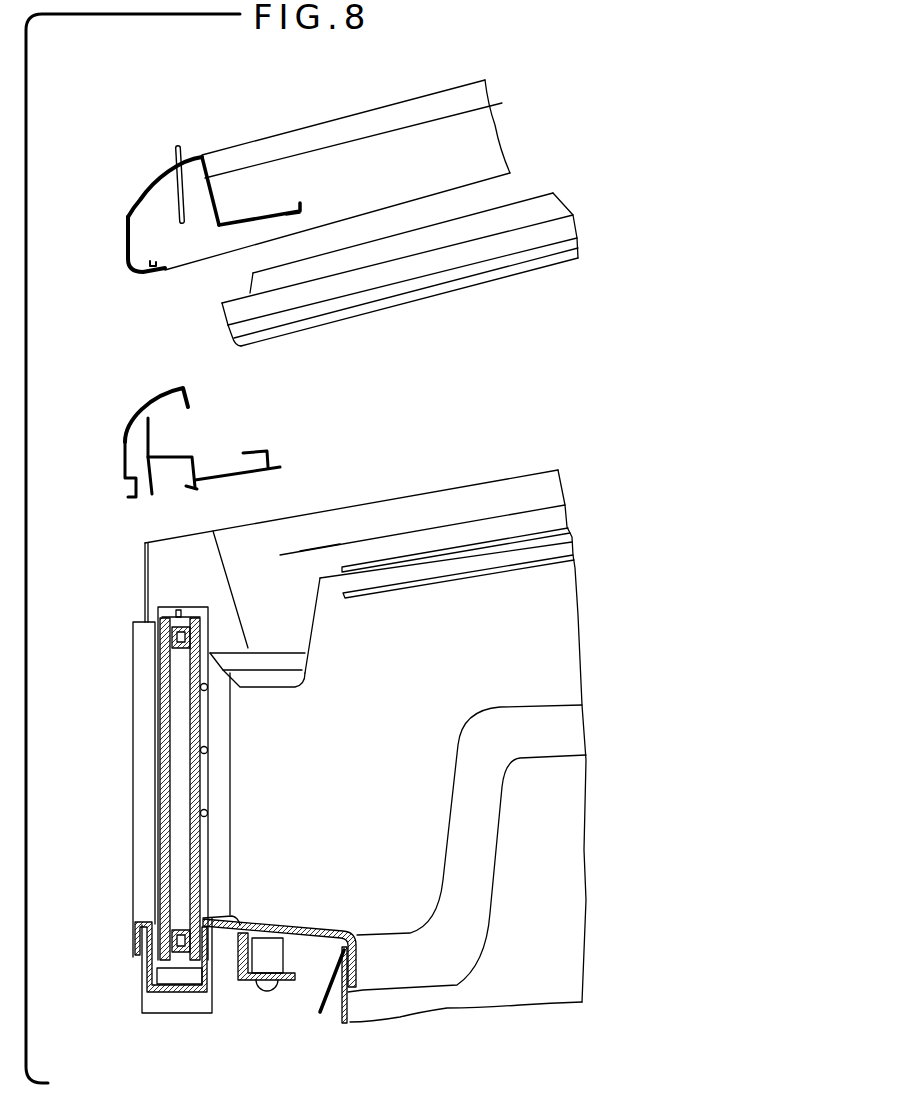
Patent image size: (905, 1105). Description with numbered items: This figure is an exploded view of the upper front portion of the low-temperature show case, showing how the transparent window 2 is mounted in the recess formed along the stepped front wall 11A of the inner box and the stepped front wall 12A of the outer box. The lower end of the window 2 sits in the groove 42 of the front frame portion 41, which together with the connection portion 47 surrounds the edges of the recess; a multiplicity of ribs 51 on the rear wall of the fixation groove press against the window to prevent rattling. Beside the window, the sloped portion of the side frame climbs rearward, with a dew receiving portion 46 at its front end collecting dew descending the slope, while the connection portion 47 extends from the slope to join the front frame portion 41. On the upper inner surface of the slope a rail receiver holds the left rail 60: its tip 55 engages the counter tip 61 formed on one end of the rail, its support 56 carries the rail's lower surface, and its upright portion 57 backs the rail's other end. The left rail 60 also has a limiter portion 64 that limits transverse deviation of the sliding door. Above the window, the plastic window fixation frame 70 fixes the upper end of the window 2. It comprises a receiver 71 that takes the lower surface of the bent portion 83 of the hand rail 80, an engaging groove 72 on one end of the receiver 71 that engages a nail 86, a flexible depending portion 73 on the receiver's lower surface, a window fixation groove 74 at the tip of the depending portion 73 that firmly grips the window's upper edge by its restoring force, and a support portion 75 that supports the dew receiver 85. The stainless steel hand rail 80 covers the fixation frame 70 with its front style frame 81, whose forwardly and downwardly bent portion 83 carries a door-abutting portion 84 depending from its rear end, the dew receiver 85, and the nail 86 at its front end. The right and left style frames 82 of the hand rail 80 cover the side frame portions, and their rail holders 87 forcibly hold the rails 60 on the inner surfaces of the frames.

The window 2 is at (158, 765).
The front wall of the inner box 11A is at (353, 1008).
The front wall of the outer box 12A is at (140, 987).
The front frame portion 41 is at (294, 927).
The groove 42 is at (190, 978).
The dew receiving portion 46 is at (290, 680).
The connection portion 47 is at (318, 932).
The ribs 51 is at (207, 688).
The tip 55 is at (407, 571).
The support 56 is at (445, 548).
The upright portion 57 is at (478, 525).
The left rail 60 is at (418, 285).
The counter tip 61 is at (232, 339).
The limiter portion 64 is at (230, 311).
The window fixation frame 70 is at (107, 421).
The receiver 71 is at (150, 405).
The engaging groove 72 is at (127, 483).
The flexible depending portion 73 is at (152, 432).
The window fixation groove 74 is at (190, 477).
The support portion 75 is at (253, 443).
The hand rail 80 is at (122, 183).
The front style frame 81 is at (117, 214).
The style frames 82 is at (287, 130).
The bent portion 83 is at (149, 178).
The door-abutting portion 84 is at (210, 207).
The dew receiver 85 is at (300, 202).
The nail 86 is at (154, 266).
The rail holders 87 is at (387, 113).